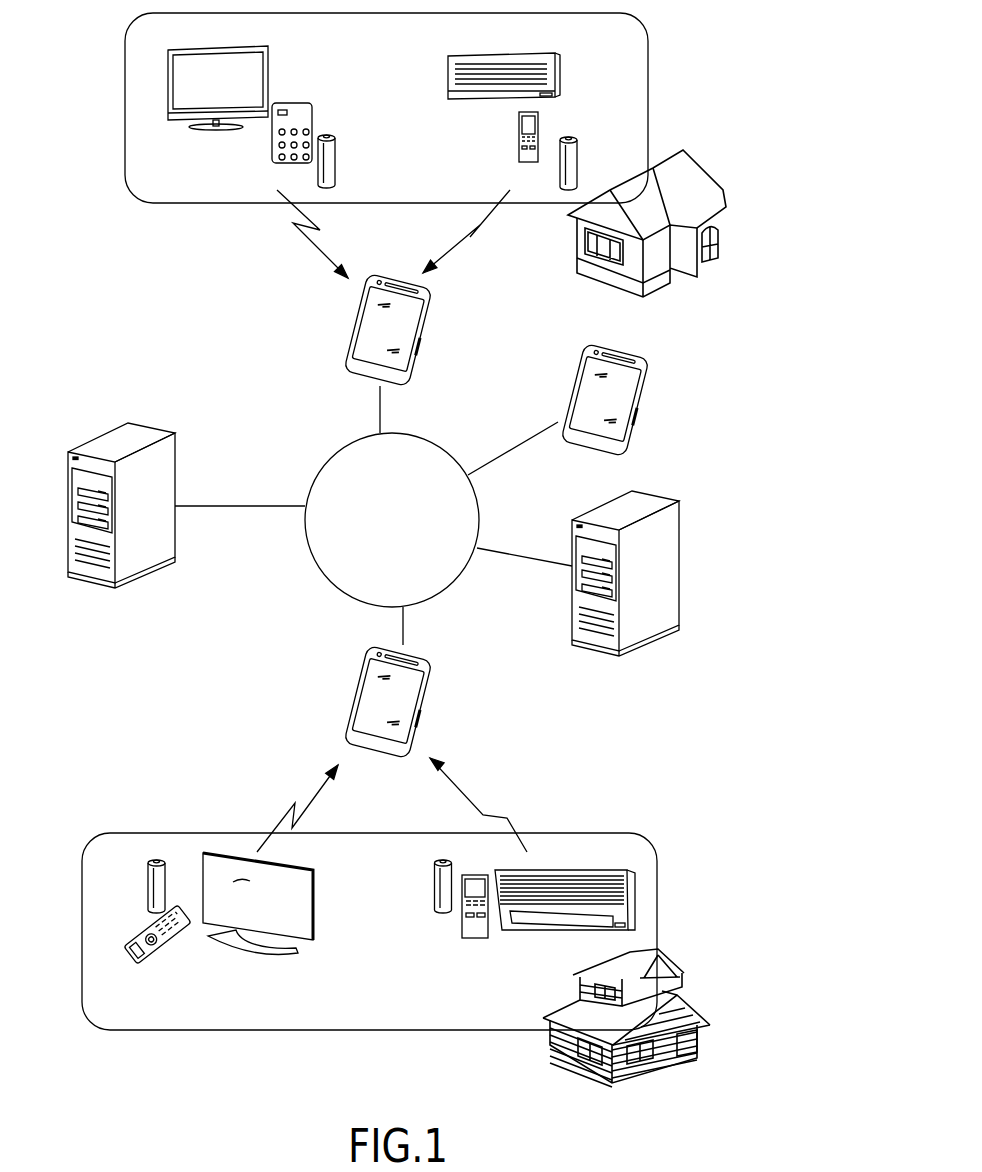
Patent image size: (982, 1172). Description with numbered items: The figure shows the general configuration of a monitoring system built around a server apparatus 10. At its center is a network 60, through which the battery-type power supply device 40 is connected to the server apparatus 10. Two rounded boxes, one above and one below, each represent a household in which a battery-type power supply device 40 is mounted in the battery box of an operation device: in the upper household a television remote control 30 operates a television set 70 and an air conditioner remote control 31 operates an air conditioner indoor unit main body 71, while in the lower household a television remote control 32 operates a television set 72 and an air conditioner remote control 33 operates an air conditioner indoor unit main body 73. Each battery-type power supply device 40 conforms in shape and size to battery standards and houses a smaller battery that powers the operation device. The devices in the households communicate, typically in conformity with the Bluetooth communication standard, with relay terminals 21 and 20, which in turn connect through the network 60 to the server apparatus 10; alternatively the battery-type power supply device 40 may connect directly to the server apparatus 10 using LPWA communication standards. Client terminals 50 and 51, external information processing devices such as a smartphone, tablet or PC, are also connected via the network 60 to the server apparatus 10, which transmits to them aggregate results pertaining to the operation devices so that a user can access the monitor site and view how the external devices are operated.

The server apparatus 10 is at (150, 425).
The relay terminal 20 is at (423, 707).
The relay terminal 21 is at (416, 350).
The television remote control 30 is at (300, 103).
The air conditioner remote control 31 is at (518, 135).
The television remote control 32 is at (160, 952).
The air conditioner remote control 33 is at (480, 938).
The battery-type power supply device 40 is at (329, 134).
The client terminal 50 is at (652, 367).
The client terminal 51 is at (680, 595).
The network 60 is at (392, 520).
The television set 70 is at (268, 47).
The air conditioner indoor unit main body 71 is at (560, 53).
The television set 72 is at (313, 930).
The air conditioner indoor unit main body 73 is at (602, 865).